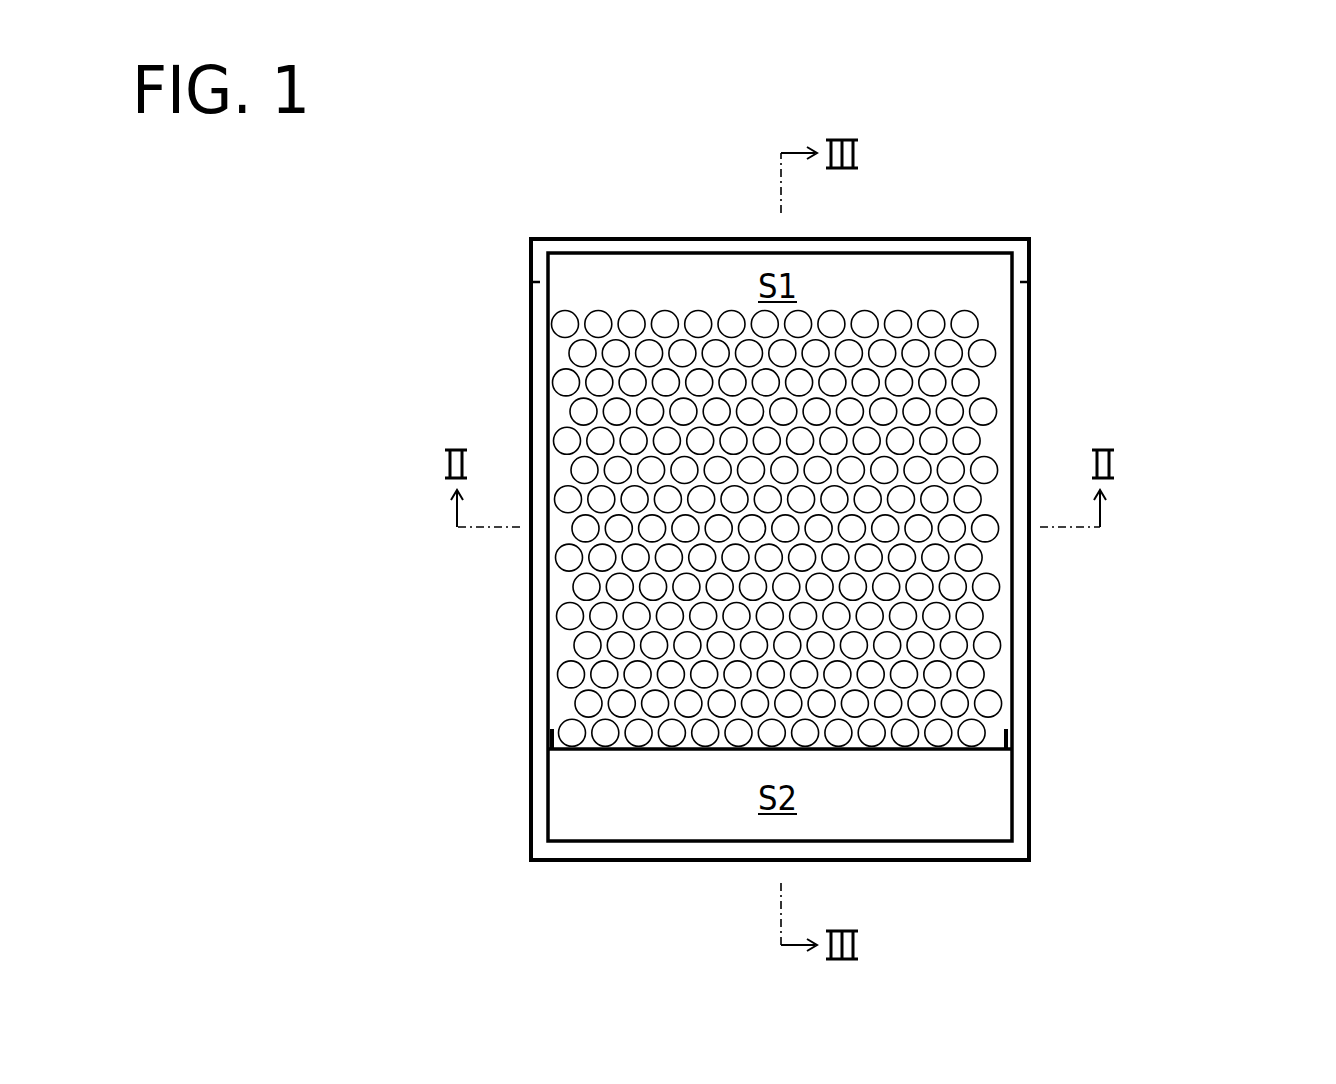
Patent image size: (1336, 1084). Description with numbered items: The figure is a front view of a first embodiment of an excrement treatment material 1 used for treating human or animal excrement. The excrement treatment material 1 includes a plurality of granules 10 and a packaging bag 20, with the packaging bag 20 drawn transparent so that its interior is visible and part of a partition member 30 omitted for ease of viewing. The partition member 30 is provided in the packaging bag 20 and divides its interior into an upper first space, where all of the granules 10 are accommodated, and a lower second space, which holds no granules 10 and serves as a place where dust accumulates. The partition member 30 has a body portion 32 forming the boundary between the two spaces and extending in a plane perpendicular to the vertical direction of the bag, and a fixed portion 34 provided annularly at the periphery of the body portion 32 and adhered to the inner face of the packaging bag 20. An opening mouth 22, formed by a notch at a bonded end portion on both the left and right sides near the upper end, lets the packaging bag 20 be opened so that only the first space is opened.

The excrement treatment material 1 is at (988, 156).
The granules 10 is at (560, 675).
The packaging bag 20 is at (531, 239).
The opening mouth 22 is at (1029, 283).
The partition member 30 is at (911, 735).
The body portion 32 is at (950, 750).
The fixed portion 34 is at (1015, 741).